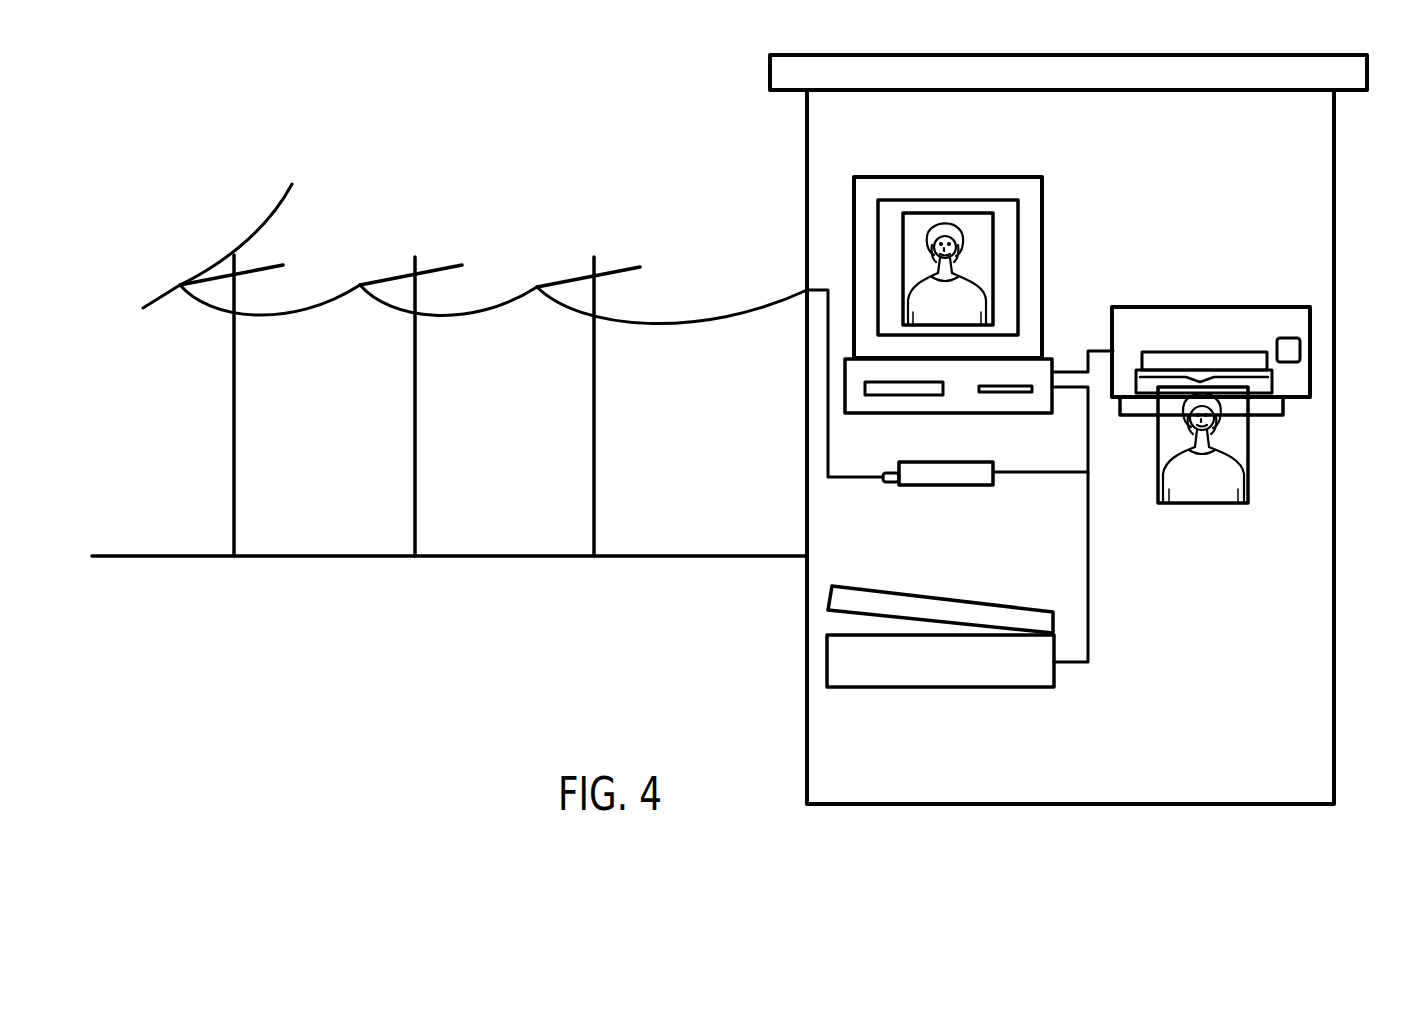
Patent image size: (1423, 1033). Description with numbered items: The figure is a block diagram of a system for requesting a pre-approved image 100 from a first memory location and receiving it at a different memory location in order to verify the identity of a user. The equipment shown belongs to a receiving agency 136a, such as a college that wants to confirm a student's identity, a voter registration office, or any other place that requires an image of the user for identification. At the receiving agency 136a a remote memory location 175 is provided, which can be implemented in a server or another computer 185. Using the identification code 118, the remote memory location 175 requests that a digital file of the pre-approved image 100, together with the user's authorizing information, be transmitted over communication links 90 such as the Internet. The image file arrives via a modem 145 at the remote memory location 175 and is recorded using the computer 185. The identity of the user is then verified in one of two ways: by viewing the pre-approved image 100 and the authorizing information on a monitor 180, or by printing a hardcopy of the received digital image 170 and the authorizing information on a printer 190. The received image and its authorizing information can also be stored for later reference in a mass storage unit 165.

The communication links 90 is at (488, 308).
The pre-approved image 100 is at (982, 250).
The identification code 118 is at (923, 303).
The receiving agency 136a is at (1336, 785).
The modem 145 is at (913, 473).
The mass storage unit 165 is at (866, 388).
The received digital image 170 is at (1235, 437).
The remote memory location 175 is at (848, 359).
The monitor 180 is at (1030, 195).
The computer 185 is at (856, 373).
The printer 190 is at (1277, 317).